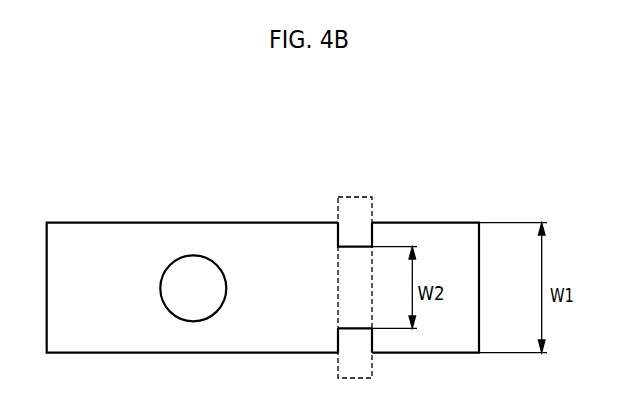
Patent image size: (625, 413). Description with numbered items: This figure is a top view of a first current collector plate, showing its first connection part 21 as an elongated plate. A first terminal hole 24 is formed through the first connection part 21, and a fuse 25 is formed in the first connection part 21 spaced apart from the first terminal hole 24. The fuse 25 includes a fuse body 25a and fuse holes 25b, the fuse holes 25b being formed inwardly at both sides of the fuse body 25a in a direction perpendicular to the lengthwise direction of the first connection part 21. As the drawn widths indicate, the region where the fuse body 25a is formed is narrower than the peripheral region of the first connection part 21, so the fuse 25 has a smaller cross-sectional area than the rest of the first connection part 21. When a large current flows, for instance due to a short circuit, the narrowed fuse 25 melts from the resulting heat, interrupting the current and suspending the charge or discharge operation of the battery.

The first connection part 21 is at (100, 235).
The first terminal hole 24 is at (196, 265).
The fuse 25 is at (401, 241).
The fuse body 25a is at (353, 288).
The fuse hole 25b is at (353, 246).